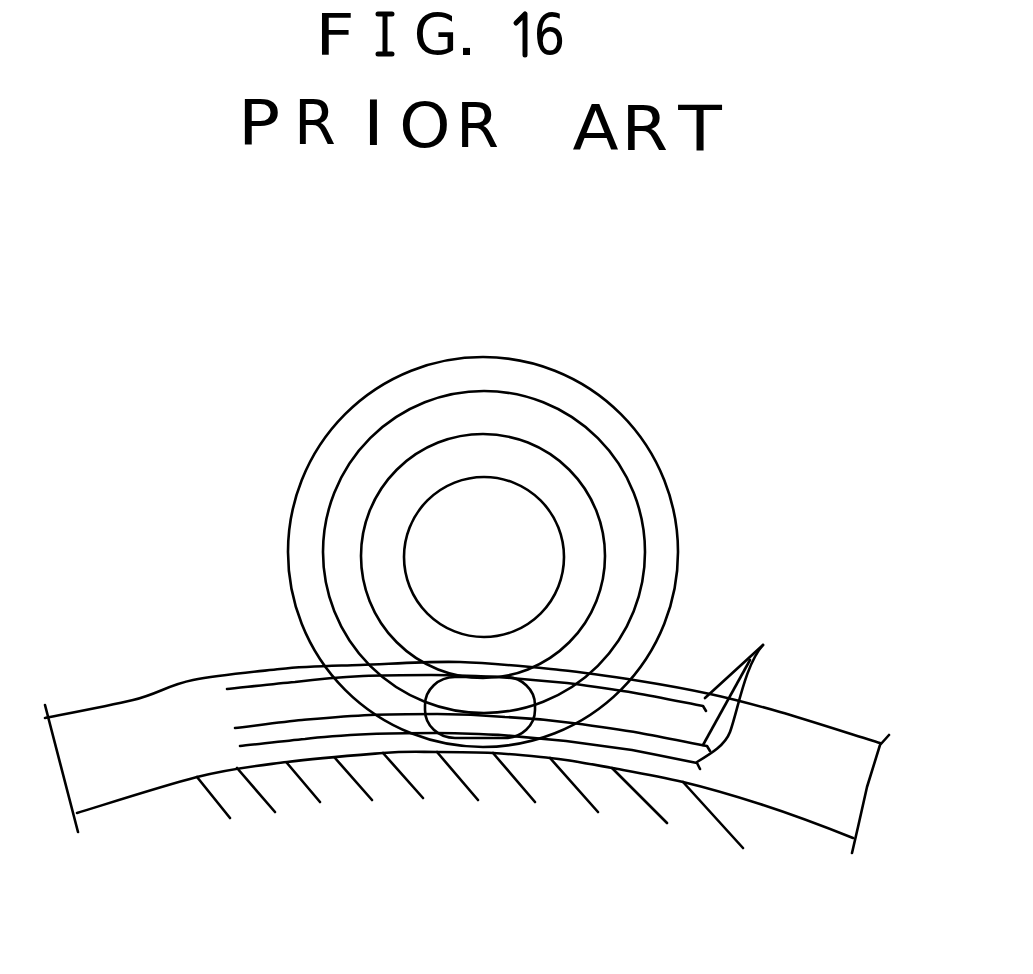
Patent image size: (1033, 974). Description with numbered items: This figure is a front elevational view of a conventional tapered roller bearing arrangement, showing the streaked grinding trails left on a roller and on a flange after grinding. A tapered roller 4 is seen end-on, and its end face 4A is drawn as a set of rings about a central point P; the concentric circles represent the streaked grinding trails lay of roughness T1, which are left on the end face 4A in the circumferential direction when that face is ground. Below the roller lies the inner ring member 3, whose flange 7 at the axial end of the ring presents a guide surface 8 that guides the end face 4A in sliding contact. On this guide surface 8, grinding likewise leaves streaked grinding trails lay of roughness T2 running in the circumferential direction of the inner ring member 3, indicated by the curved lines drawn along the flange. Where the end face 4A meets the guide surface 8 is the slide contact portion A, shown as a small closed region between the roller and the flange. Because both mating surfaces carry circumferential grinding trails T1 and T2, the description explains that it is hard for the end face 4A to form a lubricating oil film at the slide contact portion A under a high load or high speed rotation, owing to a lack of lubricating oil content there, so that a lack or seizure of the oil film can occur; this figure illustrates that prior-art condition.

The inner ring member 3 is at (473, 749).
The solder ball (bump) 4 is at (531, 507).
The end face of tapered roller 4A is at (345, 437).
The conductive layer 7 is at (193, 680).
The guide surface 8 is at (152, 718).
The center of ball P is at (498, 512).
The slide contact portion A is at (540, 743).
The streaked grinding trails lay of roughness on end face T1 is at (762, 687).
The streaked grinding trails lay of roughness on guide surface T2 is at (592, 503).